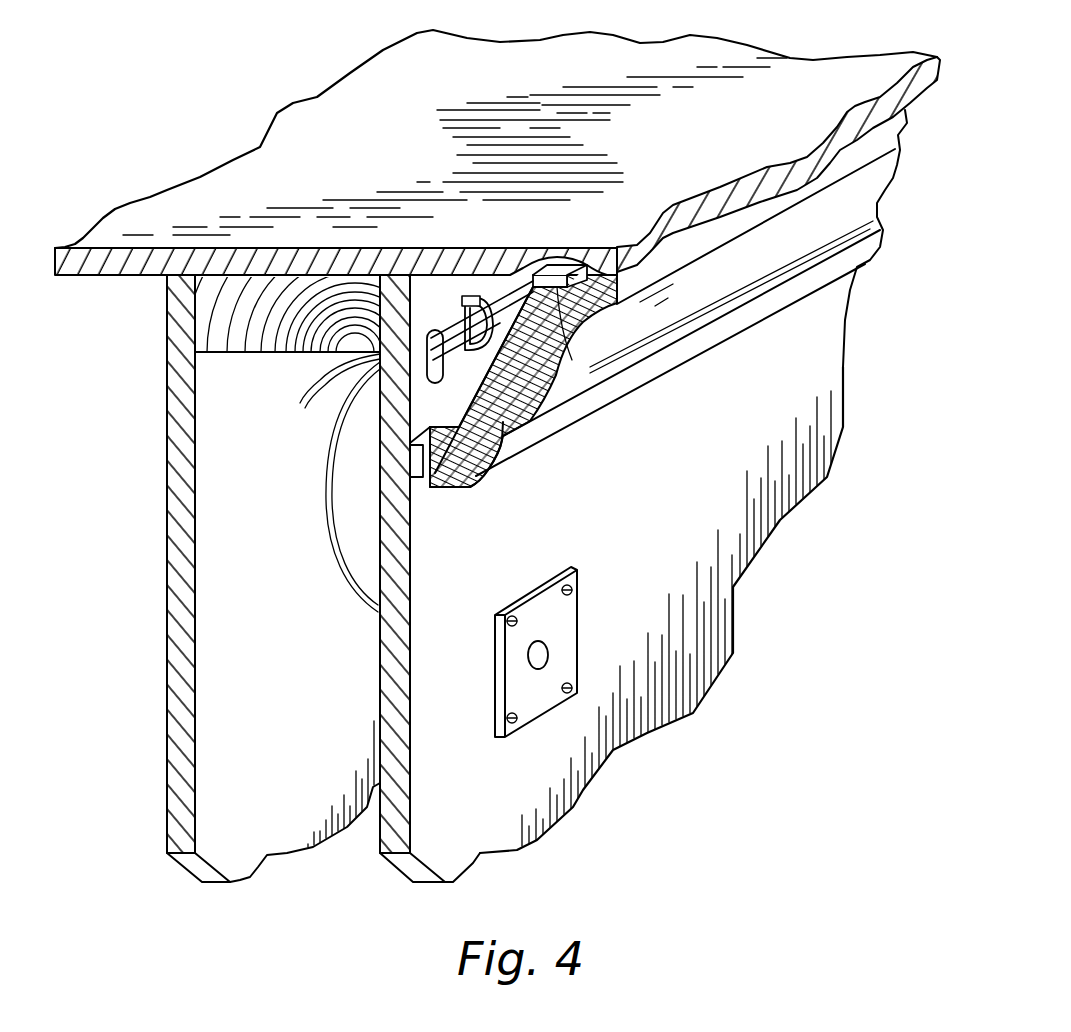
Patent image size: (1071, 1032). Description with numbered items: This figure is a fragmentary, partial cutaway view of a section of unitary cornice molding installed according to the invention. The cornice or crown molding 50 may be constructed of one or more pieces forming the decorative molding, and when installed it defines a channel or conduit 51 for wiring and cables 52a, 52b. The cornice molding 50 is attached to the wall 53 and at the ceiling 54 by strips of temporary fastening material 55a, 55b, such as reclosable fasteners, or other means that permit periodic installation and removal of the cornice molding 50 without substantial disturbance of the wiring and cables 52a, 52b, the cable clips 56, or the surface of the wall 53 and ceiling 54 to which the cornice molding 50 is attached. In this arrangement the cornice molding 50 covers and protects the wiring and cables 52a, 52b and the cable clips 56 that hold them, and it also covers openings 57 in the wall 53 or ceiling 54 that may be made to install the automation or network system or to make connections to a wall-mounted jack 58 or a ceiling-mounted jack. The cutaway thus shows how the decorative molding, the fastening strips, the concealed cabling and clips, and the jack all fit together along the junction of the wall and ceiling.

The cornice molding 50 is at (723, 358).
The channel or conduit 51 is at (445, 291).
The wiring and cables 52a is at (298, 408).
The wiring and cables 52b is at (323, 503).
The wall 53 is at (380, 662).
The ceiling 54 is at (83, 278).
The strip of temporary fastening material 55a is at (416, 480).
The strip of temporary fastening material 55b is at (570, 343).
The cable clips 56 is at (533, 357).
The openings 57 is at (478, 433).
The wall-mounted jack 58 is at (578, 604).